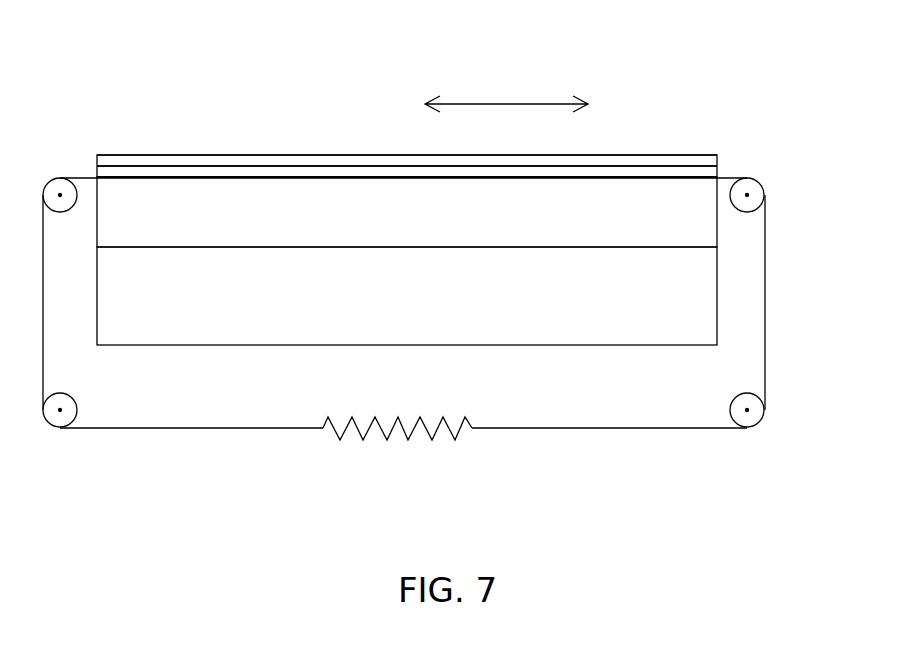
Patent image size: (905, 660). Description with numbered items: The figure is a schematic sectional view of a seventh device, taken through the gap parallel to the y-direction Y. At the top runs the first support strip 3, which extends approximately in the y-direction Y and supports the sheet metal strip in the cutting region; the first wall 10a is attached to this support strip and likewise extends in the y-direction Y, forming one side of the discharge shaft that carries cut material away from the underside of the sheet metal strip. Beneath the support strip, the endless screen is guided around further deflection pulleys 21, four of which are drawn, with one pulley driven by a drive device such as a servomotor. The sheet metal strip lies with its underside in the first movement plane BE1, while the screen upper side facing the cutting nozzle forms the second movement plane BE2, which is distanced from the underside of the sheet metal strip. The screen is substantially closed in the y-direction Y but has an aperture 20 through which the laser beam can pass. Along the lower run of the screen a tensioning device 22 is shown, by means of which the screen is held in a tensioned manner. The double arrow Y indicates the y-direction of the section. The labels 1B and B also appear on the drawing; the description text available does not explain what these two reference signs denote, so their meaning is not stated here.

The conveyor belt 1B is at (80, 177).
The deflection pulleys 21 is at (756, 195).
The first support strip 3 is at (695, 155).
The first movement plane BE1 is at (170, 155).
The second movement plane BE2 is at (232, 166).
The aperture 20 is at (312, 177).
The first wall 10a is at (702, 223).
The belt region B is at (702, 326).
The tensioning device 22 is at (360, 442).
The y-direction Y is at (506, 92).